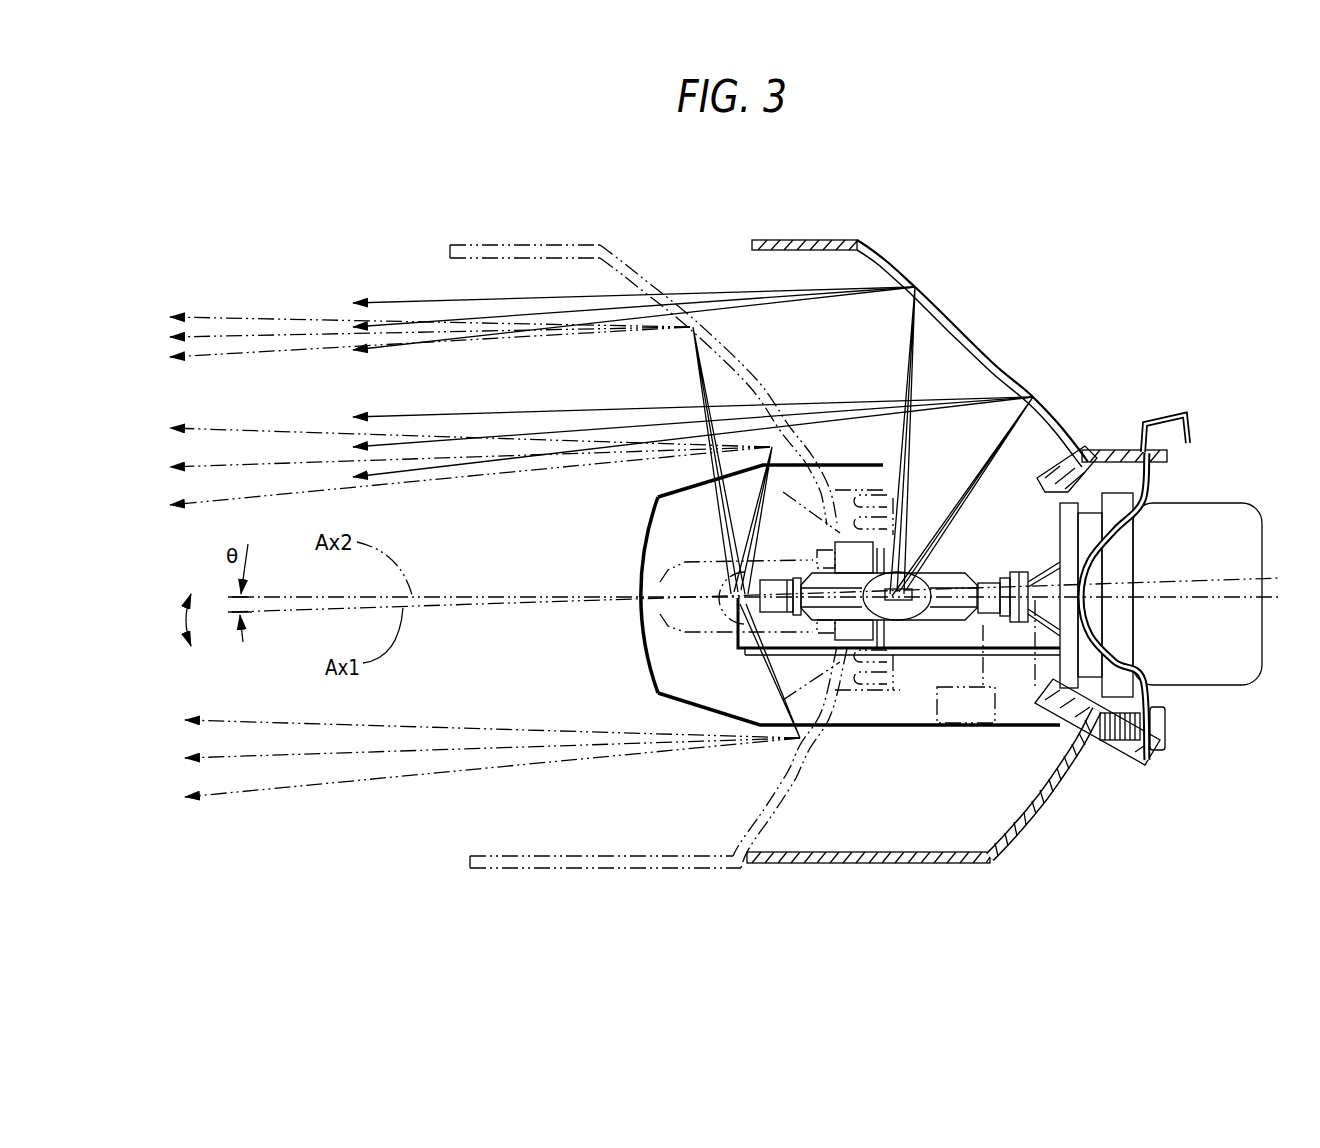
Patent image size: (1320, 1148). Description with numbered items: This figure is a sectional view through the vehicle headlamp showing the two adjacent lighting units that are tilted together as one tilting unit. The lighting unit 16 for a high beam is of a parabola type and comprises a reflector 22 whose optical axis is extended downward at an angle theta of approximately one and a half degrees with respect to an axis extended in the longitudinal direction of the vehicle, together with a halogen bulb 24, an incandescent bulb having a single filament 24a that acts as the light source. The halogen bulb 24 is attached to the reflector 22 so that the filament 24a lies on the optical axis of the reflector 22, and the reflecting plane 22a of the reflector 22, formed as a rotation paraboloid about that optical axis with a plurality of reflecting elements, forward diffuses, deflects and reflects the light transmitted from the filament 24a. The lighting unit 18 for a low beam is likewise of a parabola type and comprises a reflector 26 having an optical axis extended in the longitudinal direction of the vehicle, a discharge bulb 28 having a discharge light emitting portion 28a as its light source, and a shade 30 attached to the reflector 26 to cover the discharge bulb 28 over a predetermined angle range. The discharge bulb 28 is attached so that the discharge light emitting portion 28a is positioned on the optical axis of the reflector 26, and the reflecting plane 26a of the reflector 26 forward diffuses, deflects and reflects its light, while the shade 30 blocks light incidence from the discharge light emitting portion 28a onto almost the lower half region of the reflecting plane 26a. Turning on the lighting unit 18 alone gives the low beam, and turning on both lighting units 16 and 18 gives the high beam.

The lighting unit for a high beam 16 is at (683, 262).
The lighting unit for a low beam 18 is at (1048, 270).
The reflector 22 is at (757, 354).
The reflecting plane 22a is at (698, 362).
The halogen bulb 24 is at (676, 550).
The filament 24a is at (735, 572).
The reflector 26 is at (1038, 361).
The reflecting plane 26a is at (968, 337).
The discharge bulb 28 is at (951, 575).
The discharge light emitting portion 28a is at (883, 537).
The shade 30 is at (648, 632).